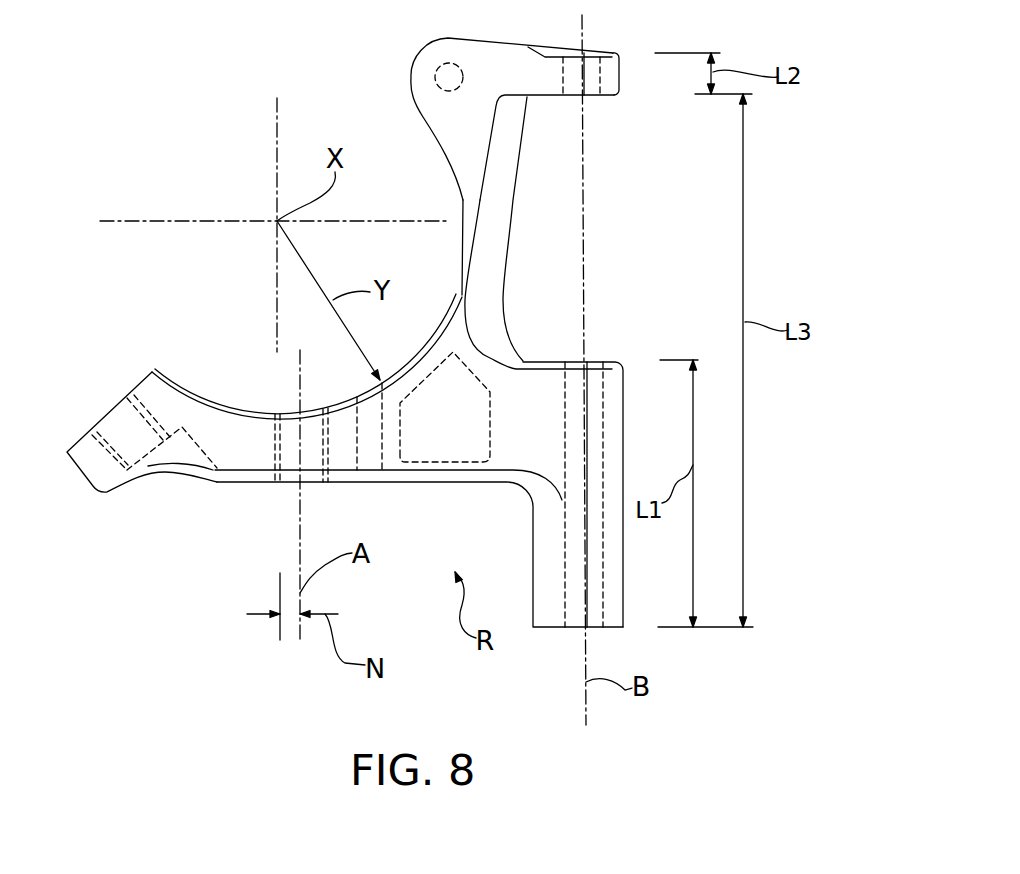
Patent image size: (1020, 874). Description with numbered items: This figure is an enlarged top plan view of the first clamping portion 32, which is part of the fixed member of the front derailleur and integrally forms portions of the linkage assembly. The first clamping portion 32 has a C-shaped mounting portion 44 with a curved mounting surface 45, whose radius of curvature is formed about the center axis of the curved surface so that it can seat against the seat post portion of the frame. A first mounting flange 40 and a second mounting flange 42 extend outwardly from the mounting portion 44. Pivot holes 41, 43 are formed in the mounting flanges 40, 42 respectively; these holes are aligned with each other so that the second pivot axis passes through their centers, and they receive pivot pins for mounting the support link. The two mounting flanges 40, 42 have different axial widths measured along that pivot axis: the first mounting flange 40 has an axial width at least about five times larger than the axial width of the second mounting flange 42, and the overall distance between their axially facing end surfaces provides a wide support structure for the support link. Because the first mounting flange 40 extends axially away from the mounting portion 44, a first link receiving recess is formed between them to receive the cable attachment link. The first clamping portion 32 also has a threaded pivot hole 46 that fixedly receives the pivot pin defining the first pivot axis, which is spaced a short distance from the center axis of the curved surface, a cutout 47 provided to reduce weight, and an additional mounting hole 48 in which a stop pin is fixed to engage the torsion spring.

The first clamping portion 32 is at (185, 138).
The first mounting flange 40 is at (615, 388).
The pivot hole 41 is at (603, 607).
The second mounting flange 42 is at (618, 60).
The pivot hole 43 is at (598, 86).
The C-shaped mounting portion 44 is at (472, 178).
The curved mounting surface 45 is at (265, 410).
The threaded pivot hole 46 is at (290, 452).
The cutout 47 is at (473, 447).
The mounting hole 48 is at (357, 455).